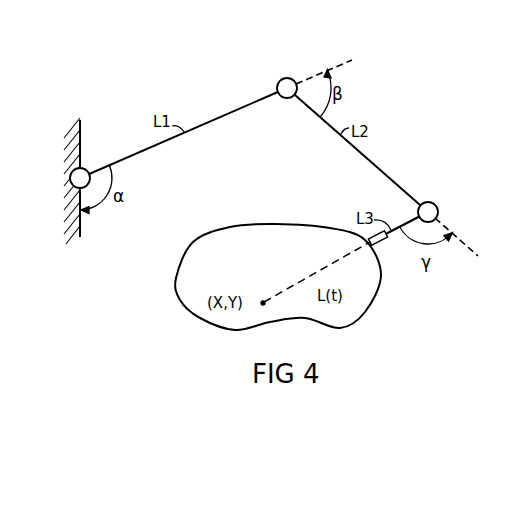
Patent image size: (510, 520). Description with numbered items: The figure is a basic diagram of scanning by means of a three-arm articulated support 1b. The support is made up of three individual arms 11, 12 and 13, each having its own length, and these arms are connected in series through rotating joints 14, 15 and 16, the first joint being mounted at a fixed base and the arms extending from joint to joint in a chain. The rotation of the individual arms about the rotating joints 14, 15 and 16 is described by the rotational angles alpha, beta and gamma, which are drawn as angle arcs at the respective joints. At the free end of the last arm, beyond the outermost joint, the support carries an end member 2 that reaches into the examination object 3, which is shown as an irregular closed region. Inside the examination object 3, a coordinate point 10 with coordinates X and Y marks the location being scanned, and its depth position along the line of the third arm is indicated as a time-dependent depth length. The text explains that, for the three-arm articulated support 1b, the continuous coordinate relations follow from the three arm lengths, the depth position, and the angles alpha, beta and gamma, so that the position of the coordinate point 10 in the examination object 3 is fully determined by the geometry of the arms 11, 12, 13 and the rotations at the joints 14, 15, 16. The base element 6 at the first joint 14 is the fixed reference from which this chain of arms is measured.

The three-arm articulated support 1b is at (254, 130).
The gripper / hand 2 is at (380, 246).
The examination object 3 is at (193, 250).
The fixed base / wall 6 is at (82, 127).
The target point (X,Y) 10 is at (267, 302).
The arm 11 is at (212, 119).
The arm 12 is at (375, 165).
The arm 13 is at (403, 225).
The rotating joint 14 is at (70, 178).
The rotating joint 15 is at (287, 78).
The rotating joint 16 is at (438, 209).